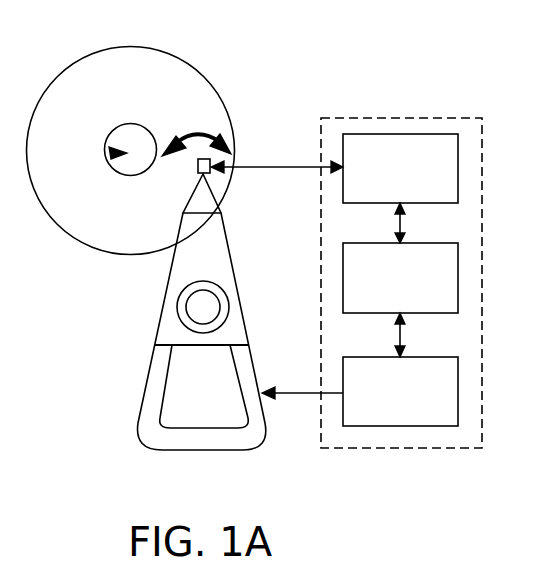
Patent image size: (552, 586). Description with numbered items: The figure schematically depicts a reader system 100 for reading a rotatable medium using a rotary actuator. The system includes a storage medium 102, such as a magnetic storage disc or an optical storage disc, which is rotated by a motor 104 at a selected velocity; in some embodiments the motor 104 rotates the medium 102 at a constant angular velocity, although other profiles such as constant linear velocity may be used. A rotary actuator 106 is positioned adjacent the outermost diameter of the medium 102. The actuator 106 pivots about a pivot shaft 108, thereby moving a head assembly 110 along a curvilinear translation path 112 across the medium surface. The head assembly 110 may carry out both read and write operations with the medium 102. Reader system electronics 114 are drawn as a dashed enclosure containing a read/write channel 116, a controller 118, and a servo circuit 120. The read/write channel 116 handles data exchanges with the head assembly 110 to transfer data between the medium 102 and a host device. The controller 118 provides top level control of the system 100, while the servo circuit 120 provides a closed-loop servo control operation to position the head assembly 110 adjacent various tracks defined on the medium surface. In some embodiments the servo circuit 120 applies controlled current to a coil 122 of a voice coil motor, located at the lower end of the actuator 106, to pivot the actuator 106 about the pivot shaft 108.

The reader system 100 is at (494, 68).
The storage medium 102 is at (102, 60).
The motor 104 is at (112, 155).
The rotary actuator 106 is at (120, 431).
The pivot shaft 108 is at (197, 308).
The head assembly 110 is at (198, 166).
The curvilinear translation path 112 is at (200, 132).
The reader system electronics 114 is at (383, 117).
The read/write channel 116 is at (382, 204).
The controller 118 is at (387, 314).
The servo circuit 120 is at (417, 356).
The coil 122 is at (202, 440).